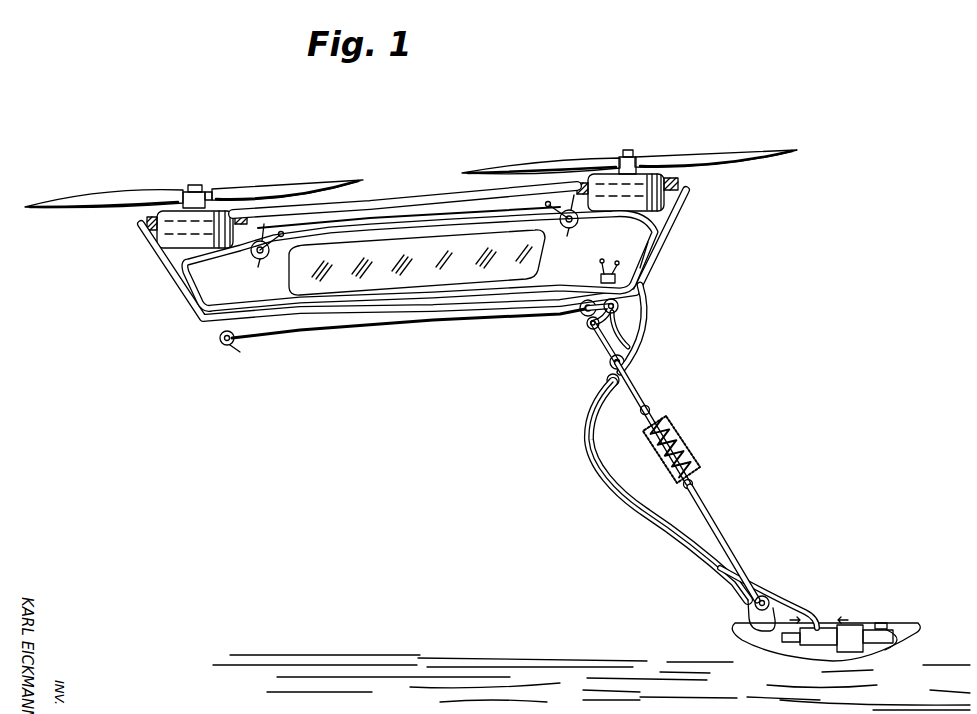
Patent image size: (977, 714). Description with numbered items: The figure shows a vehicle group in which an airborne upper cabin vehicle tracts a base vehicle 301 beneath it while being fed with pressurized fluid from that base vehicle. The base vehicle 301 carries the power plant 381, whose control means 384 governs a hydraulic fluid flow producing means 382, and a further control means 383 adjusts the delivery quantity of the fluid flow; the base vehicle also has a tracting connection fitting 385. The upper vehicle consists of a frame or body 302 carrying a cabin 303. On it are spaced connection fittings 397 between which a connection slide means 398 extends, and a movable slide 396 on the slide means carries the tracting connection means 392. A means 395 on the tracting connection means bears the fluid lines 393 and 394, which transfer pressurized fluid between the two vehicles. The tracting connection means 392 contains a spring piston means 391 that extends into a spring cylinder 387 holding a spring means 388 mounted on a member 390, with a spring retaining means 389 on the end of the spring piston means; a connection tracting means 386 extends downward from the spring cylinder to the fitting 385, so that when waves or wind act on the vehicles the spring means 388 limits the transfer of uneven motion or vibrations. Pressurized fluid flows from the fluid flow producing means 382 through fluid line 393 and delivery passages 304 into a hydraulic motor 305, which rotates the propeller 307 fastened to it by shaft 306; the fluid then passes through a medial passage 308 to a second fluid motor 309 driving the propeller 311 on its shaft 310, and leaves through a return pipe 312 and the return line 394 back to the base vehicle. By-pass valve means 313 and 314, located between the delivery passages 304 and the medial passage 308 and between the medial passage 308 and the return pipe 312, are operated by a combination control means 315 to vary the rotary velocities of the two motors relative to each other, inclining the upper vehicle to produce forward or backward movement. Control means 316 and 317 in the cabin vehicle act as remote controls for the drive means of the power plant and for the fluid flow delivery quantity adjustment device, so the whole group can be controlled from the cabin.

The base vehicle 301 is at (782, 650).
The frame or body 302 is at (136, 225).
The cabin 303 is at (436, 275).
The delivery passages 304 is at (196, 316).
The hydraulic motor 305 is at (160, 243).
The shaft 306 is at (212, 174).
The propeller 307 is at (281, 184).
The medial passage 308 is at (381, 200).
The second fluid motor 309 is at (674, 199).
The shaft 310 is at (629, 149).
The propeller 311 is at (541, 164).
The return pipe 312 is at (650, 258).
The by-pass valve means 313 is at (259, 259).
The by-pass valve means 314 is at (569, 229).
The combination control means 315 is at (407, 217).
The control means 316 is at (600, 262).
The control means 317 is at (617, 261).
The power plant 381 is at (851, 626).
The hydraulic fluid flow producing means 382 is at (830, 624).
The control means 383 is at (792, 644).
The control means 384 is at (884, 623).
The tracting connection fitting 385 is at (752, 604).
The connection tracting means 386 is at (722, 538).
The spring cylinder 387 is at (694, 484).
The spring means 388 is at (686, 442).
The spring retaining means 389 is at (698, 465).
The member 390 is at (660, 426).
The spring piston means 391 is at (650, 410).
The tracting connection means 392 is at (632, 380).
The fluid line 393 is at (592, 447).
The return line 394 is at (594, 426).
The means for bearing the fluid lines 395 is at (606, 358).
The movable slide 396 is at (580, 312).
The connection fittings 397 is at (642, 293).
The connection slide means 398 is at (390, 330).